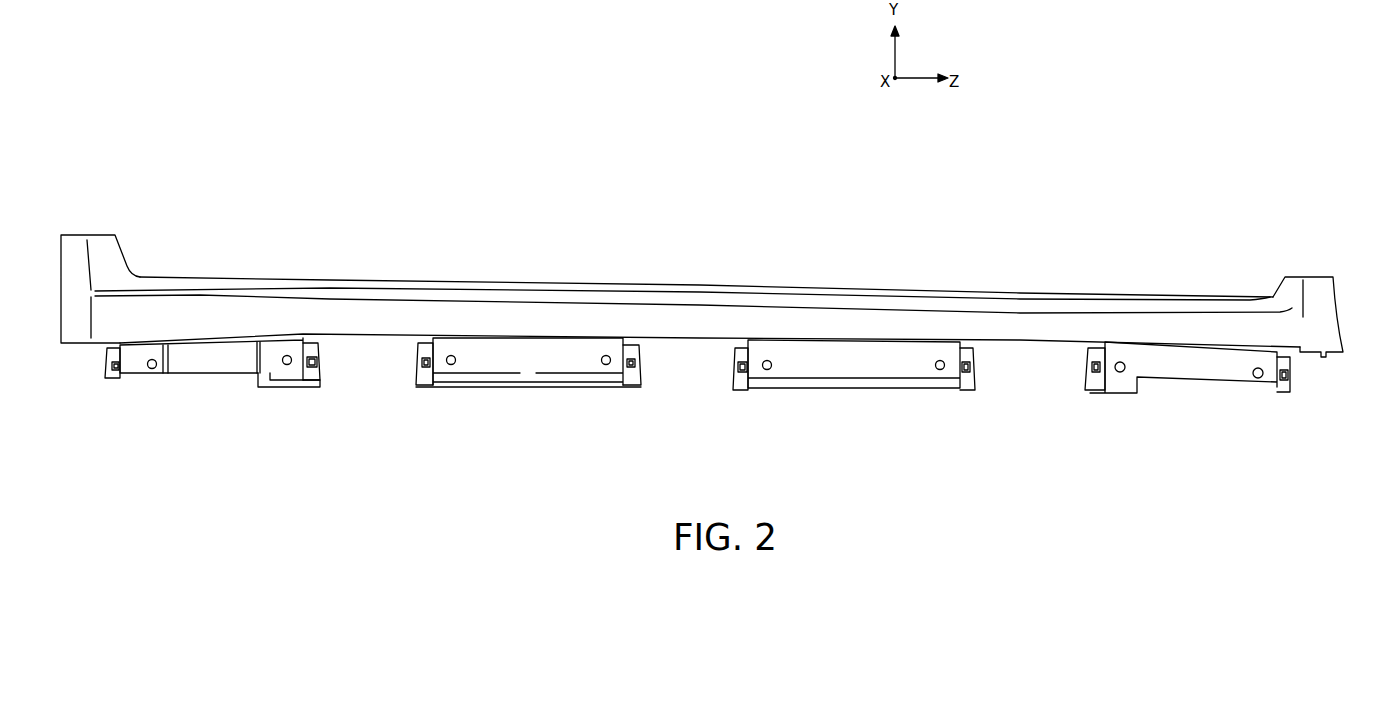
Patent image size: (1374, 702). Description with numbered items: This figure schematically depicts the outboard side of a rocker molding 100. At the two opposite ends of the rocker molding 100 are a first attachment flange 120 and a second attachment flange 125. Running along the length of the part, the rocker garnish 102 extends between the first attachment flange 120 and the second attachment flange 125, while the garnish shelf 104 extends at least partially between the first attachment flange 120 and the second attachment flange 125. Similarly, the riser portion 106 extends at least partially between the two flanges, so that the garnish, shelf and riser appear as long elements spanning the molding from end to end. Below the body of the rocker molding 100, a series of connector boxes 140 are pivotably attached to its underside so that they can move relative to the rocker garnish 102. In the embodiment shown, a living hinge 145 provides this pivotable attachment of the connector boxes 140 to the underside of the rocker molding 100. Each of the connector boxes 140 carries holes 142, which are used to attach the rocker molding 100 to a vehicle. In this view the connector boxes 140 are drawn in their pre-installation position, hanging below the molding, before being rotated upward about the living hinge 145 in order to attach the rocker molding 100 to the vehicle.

The rocker molding 100 is at (738, 212).
The rocker garnish 102 is at (193, 312).
The garnish shelf 104 is at (270, 295).
The riser portion 106 is at (360, 283).
The first attachment flange 120 is at (57, 254).
The second attachment flange 125 is at (1337, 288).
The connector boxes 140 is at (207, 362).
The holes 142 is at (451, 366).
The living hinge 145 is at (590, 340).